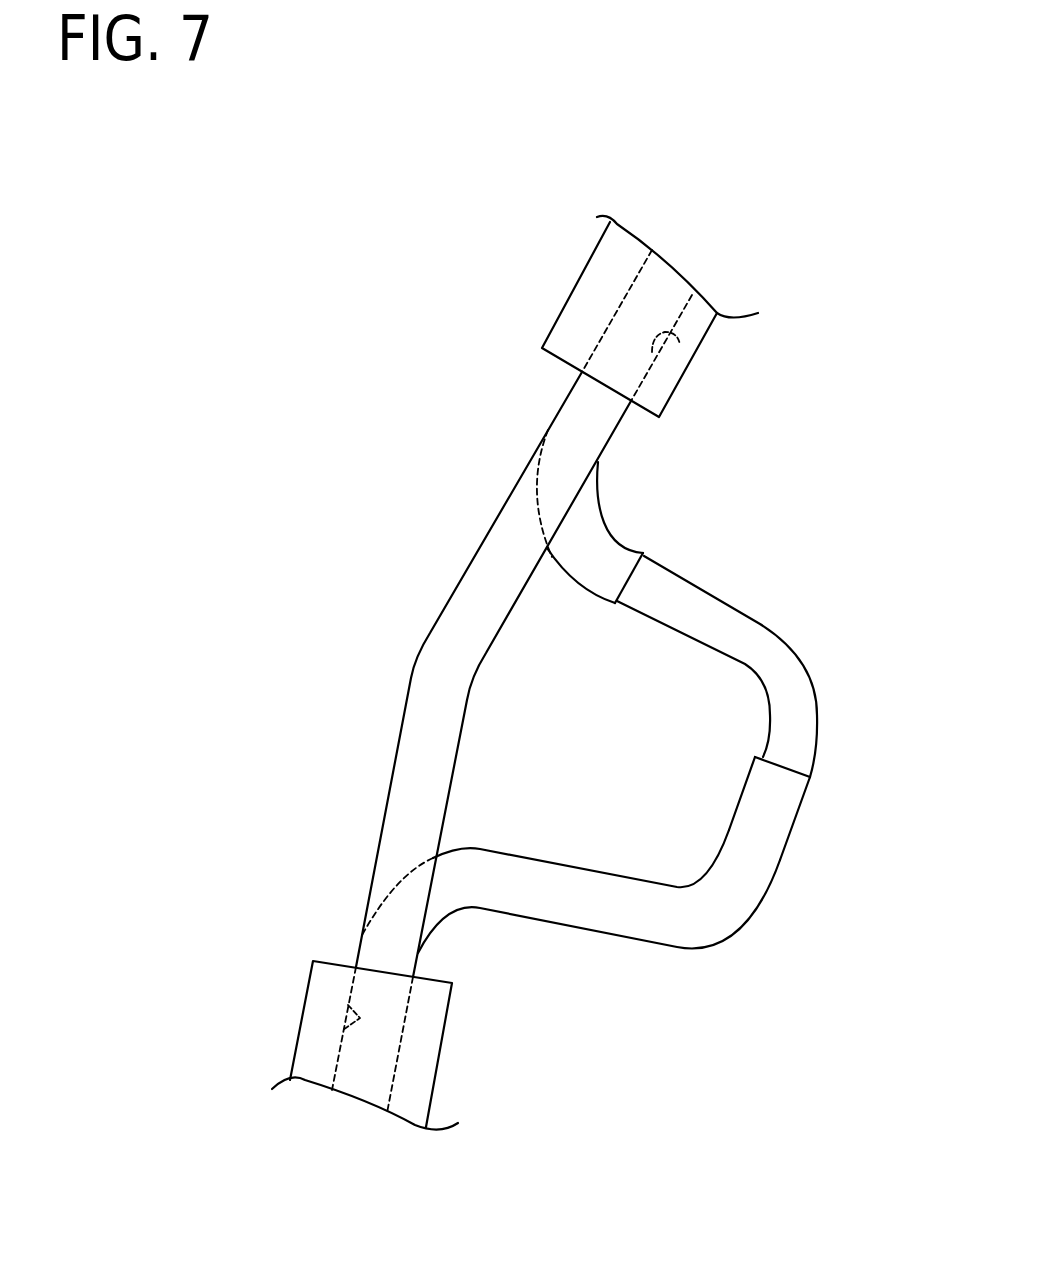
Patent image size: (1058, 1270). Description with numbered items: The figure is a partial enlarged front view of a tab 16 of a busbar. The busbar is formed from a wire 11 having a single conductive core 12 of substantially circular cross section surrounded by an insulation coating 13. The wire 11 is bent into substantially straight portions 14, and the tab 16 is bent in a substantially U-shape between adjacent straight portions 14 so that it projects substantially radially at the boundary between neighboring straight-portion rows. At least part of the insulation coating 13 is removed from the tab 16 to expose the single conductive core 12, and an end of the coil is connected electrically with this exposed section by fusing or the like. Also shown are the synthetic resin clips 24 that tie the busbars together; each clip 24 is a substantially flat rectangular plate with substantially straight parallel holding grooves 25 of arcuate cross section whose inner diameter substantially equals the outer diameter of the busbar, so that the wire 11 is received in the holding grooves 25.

The wire 11 is at (795, 853).
The conductive core 12 is at (800, 712).
The insulation coating 13 is at (777, 807).
The straight portion 14 is at (485, 593).
The tab 16 is at (725, 967).
The clip 24 is at (578, 302).
The holding groove 25 is at (680, 345).